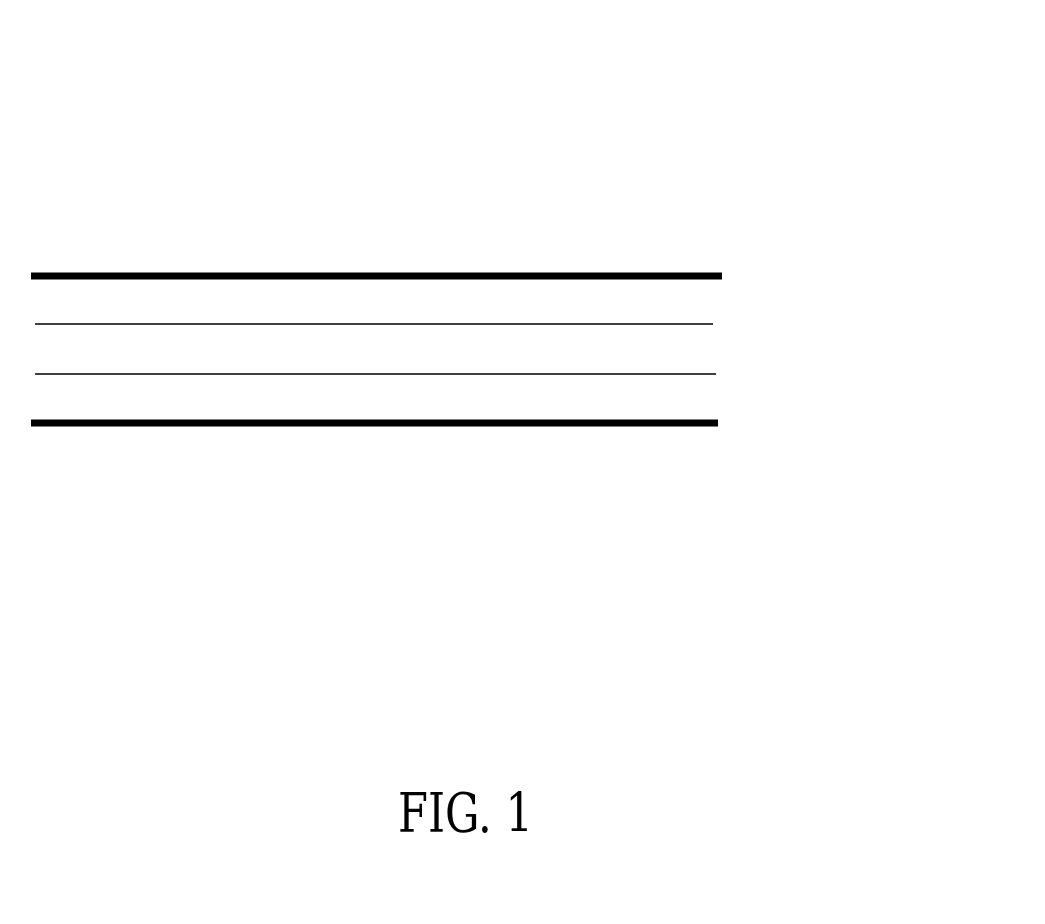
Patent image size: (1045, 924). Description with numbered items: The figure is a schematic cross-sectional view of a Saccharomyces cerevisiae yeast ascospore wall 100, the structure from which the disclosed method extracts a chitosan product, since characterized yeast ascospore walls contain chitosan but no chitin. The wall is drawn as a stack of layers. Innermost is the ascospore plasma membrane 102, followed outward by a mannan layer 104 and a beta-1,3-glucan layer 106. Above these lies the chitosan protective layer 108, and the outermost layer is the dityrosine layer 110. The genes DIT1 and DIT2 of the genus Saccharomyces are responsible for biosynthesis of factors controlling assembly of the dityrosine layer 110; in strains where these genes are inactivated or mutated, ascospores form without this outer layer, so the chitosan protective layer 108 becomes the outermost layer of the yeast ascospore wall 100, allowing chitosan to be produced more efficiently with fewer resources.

The yeast ascospore wall 100 is at (468, 110).
The ascospore plasma membrane 102 is at (717, 422).
The mannan layer 104 is at (638, 397).
The beta-1,3-glucan layer 106 is at (635, 357).
The chitosan protective layer 108 is at (635, 310).
The dityrosine layer 110 is at (722, 275).